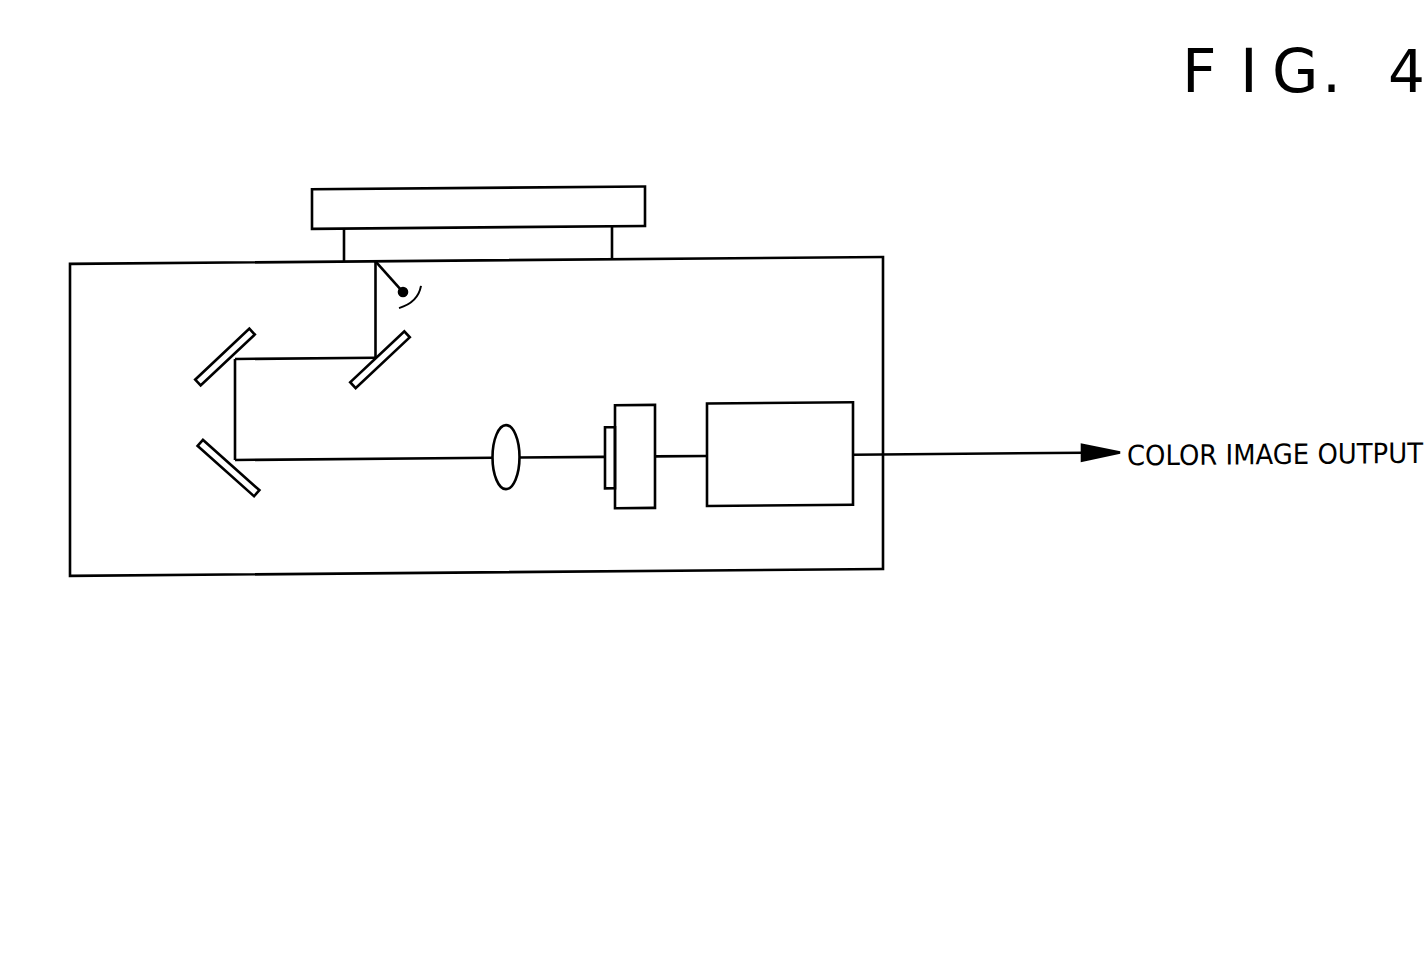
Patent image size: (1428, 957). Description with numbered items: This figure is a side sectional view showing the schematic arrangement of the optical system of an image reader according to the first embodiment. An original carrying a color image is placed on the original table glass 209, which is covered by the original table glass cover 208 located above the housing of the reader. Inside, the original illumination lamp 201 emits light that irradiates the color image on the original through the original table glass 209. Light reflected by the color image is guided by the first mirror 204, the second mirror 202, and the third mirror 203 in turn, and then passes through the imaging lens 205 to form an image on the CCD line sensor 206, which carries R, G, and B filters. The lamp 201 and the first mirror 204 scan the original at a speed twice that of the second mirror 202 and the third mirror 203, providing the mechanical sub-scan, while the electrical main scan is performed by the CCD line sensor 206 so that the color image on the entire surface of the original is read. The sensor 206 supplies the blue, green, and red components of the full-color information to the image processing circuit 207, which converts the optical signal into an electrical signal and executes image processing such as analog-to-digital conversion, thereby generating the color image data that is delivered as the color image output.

The original illumination lamp 201 is at (413, 304).
The second mirror 202 is at (217, 360).
The third mirror 203 is at (207, 462).
The first mirror 204 is at (400, 354).
The imaging lens 205 is at (519, 434).
The CCD line sensor 206 is at (630, 410).
The image processing circuit 207 is at (788, 410).
The original table glass cover 208 is at (577, 192).
The original table glass 209 is at (673, 264).